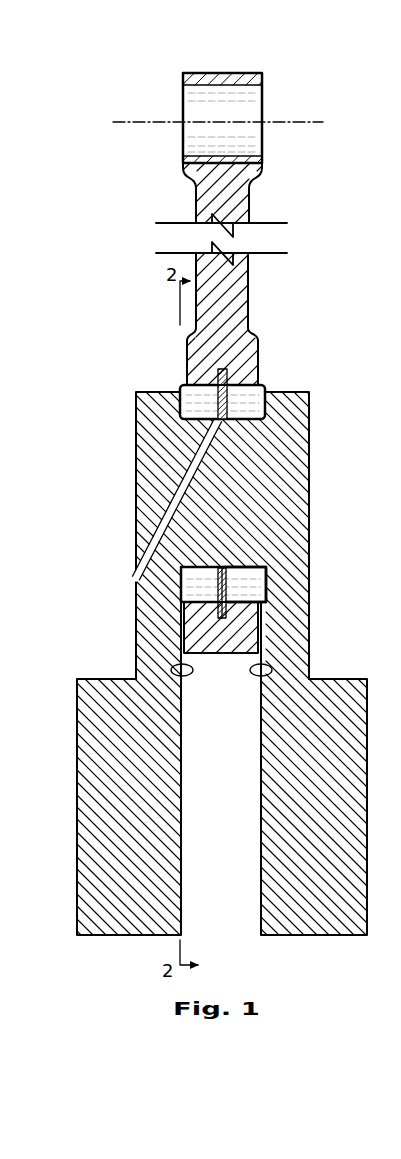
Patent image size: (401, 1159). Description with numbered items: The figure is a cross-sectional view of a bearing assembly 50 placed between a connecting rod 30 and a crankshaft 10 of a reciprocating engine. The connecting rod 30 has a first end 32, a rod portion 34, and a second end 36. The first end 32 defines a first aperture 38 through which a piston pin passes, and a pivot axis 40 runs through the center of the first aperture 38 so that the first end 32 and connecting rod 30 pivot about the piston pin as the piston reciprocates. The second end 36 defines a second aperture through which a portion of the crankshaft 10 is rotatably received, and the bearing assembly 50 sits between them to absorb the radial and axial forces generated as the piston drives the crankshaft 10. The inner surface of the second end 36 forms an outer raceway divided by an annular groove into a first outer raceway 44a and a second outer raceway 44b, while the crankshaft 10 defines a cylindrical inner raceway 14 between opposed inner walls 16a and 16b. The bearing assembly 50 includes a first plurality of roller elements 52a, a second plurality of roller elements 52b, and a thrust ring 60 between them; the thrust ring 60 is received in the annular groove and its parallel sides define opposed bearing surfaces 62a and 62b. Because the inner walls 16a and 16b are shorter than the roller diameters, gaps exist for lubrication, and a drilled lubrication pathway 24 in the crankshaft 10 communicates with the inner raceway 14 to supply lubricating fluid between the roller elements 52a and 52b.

The crankshaft 10 is at (76, 794).
The cylindrical inner raceway 14 is at (249, 413).
The inner wall 16a is at (171, 670).
The inner wall 16b is at (272, 670).
The lubrication pathway 24 is at (178, 487).
The connecting rod 30 is at (226, 119).
The first end 32 is at (250, 73).
The rod portion 34 is at (197, 210).
The second end 36 is at (226, 655).
The first aperture 38 is at (200, 90).
The pivot axis 40 is at (300, 118).
The first outer raceway 44a is at (191, 594).
The second outer raceway 44b is at (256, 594).
The bearing assembly 50 is at (273, 357).
The first plurality of roller elements 52a is at (171, 381).
The second plurality of roller elements 52b is at (274, 382).
The thrust ring 60 is at (218, 378).
The bearing surface 62a is at (218, 608).
The bearing surface 62b is at (228, 608).